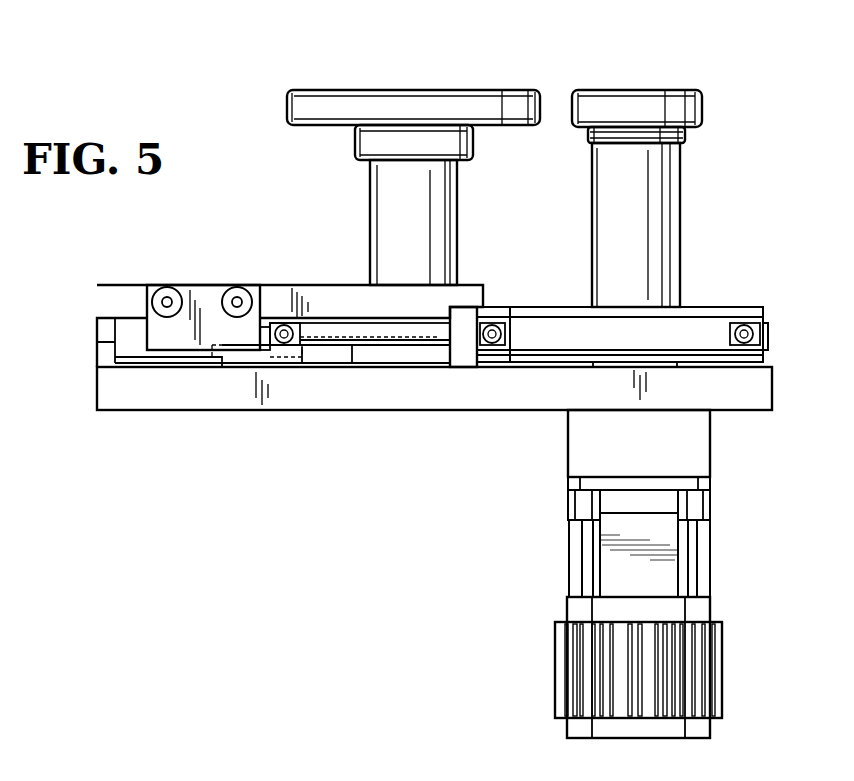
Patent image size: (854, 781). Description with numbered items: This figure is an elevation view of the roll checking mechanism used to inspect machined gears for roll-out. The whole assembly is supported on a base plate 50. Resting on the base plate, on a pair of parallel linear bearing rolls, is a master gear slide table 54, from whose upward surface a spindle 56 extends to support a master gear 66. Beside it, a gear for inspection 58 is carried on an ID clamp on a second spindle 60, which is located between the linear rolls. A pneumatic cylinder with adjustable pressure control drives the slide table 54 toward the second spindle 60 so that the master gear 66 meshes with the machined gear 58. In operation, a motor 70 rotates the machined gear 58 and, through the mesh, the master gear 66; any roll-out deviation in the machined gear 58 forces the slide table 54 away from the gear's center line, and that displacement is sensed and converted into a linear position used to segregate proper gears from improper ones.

The base plate 50 is at (760, 385).
The master gear slide table 54 is at (325, 285).
The spindle 56 is at (440, 219).
The gear for inspection 58 is at (638, 89).
The second spindle 60 is at (667, 198).
The master gear 66 is at (352, 90).
The motor 70 is at (702, 610).